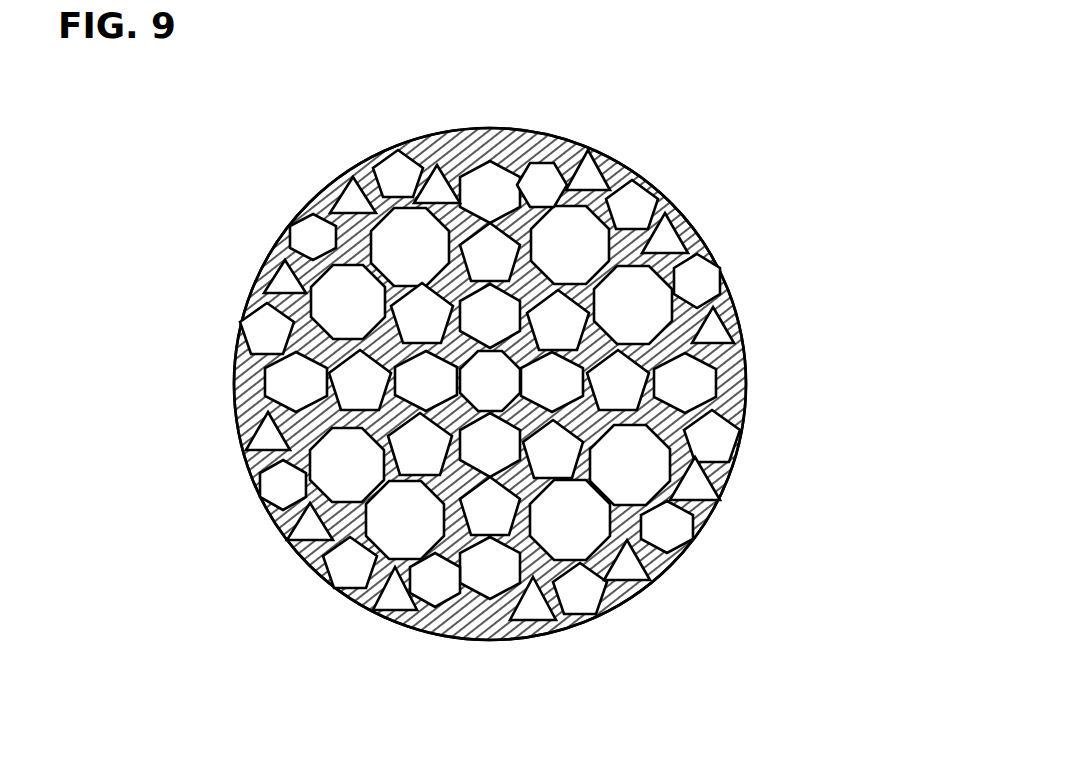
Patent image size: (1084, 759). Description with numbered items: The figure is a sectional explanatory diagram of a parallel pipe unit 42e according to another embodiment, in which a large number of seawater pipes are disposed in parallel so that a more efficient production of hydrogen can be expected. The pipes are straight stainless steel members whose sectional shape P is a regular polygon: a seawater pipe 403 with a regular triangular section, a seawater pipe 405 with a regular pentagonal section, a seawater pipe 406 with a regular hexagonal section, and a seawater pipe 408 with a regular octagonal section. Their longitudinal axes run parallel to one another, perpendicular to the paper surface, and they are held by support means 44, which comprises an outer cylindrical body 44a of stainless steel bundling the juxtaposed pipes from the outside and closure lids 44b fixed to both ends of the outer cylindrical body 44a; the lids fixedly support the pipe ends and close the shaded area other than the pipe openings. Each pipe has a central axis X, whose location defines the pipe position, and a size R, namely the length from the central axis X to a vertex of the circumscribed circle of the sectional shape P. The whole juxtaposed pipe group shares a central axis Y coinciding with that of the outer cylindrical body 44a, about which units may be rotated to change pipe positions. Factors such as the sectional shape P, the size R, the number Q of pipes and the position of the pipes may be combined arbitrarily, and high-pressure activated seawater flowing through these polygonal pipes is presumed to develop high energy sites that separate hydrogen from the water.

The parallel pipe unit 42e is at (756, 131).
The support means 44 is at (565, 384).
The outer cylindrical body 44a is at (750, 333).
The closure lids 44b is at (723, 387).
The seawater pipe having a sectional shape of a regular triangle 403 is at (608, 168).
The seawater pipe having a sectional shape of a regular pentagon 405 is at (703, 317).
The seawater pipe having a sectional shape of a regular hexagon 406 is at (492, 170).
The seawater pipe having a sectional shape of a regular octagon 408 is at (310, 292).
The central axis X is at (491, 188).
The central axis of the juxtaposed seawater pipe group Y is at (488, 385).
The size R is at (503, 177).
The sectional shape P is at (600, 170).
The number of pipes Q is at (715, 579).